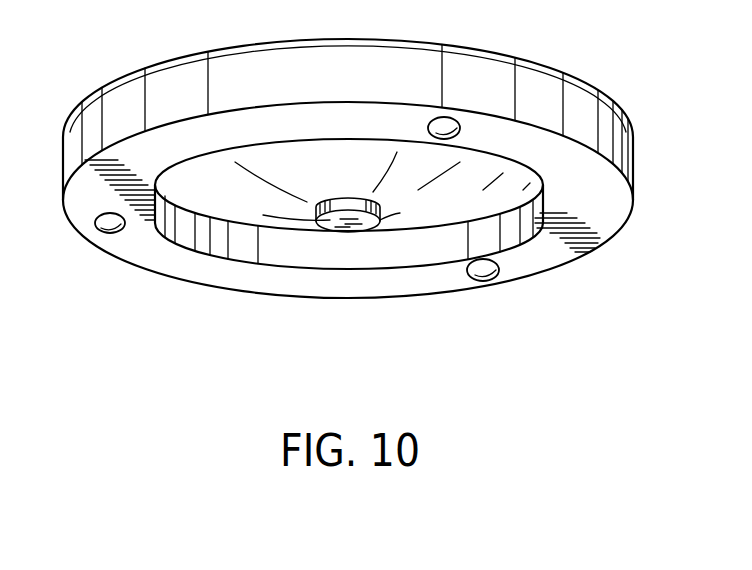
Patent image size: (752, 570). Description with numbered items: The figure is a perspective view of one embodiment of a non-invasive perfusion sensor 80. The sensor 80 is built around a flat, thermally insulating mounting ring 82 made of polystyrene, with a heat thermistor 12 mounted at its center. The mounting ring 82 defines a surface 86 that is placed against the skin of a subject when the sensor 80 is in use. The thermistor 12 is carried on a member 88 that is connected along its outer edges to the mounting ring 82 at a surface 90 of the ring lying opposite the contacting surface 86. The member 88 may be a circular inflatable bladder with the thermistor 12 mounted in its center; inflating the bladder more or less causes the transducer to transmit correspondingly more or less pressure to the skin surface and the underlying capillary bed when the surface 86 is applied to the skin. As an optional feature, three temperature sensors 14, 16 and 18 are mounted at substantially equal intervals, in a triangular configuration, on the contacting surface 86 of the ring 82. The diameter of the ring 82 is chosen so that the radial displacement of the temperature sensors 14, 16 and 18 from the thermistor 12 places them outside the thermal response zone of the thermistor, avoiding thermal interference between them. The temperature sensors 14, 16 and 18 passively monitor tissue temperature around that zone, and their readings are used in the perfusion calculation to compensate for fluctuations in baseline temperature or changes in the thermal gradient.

The non-invasive sensor 80 is at (335, 195).
The mounting ring 82 is at (580, 90).
The surface 86 is at (552, 251).
The member 88 is at (210, 173).
The surface 90 is at (215, 213).
The heat thermistor 12 is at (337, 223).
The temperature sensor 14 is at (499, 278).
The temperature sensor 16 is at (95, 232).
The temperature sensor 18 is at (455, 121).